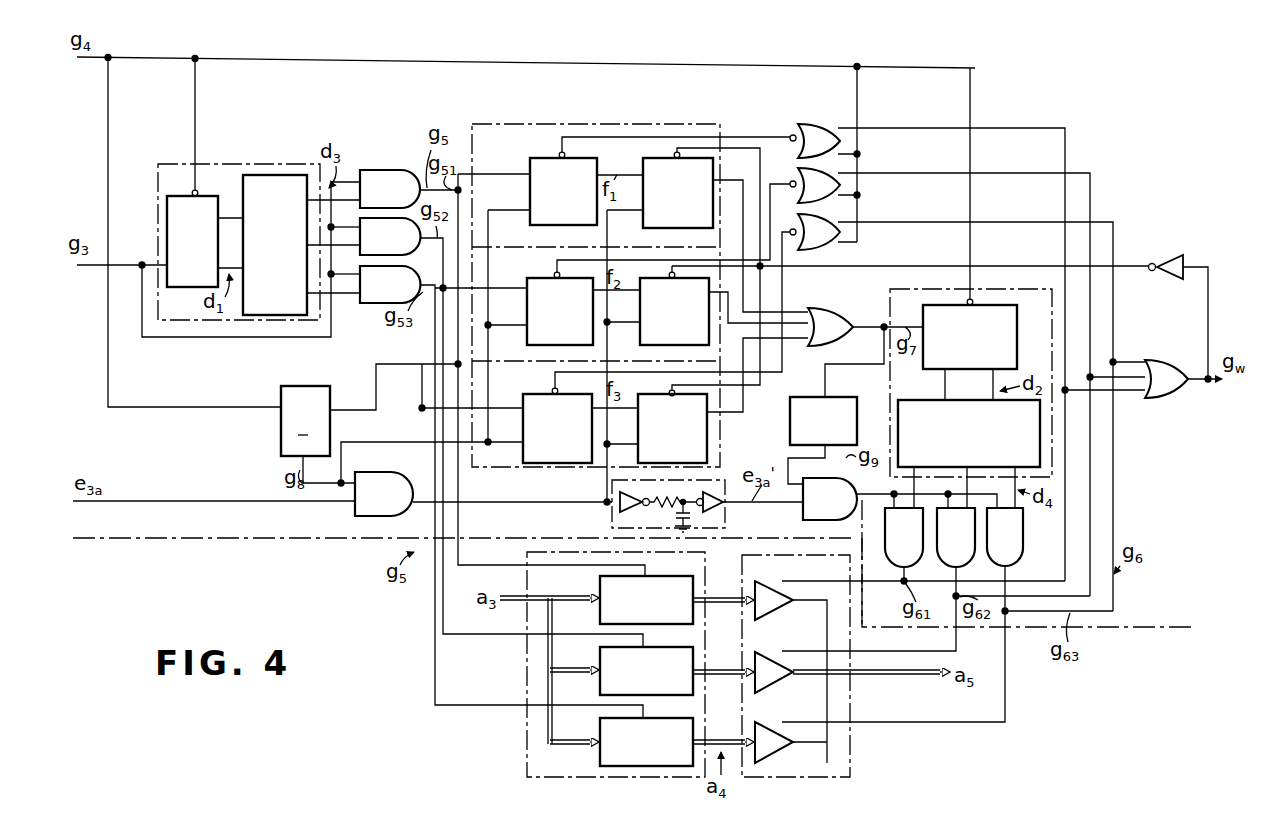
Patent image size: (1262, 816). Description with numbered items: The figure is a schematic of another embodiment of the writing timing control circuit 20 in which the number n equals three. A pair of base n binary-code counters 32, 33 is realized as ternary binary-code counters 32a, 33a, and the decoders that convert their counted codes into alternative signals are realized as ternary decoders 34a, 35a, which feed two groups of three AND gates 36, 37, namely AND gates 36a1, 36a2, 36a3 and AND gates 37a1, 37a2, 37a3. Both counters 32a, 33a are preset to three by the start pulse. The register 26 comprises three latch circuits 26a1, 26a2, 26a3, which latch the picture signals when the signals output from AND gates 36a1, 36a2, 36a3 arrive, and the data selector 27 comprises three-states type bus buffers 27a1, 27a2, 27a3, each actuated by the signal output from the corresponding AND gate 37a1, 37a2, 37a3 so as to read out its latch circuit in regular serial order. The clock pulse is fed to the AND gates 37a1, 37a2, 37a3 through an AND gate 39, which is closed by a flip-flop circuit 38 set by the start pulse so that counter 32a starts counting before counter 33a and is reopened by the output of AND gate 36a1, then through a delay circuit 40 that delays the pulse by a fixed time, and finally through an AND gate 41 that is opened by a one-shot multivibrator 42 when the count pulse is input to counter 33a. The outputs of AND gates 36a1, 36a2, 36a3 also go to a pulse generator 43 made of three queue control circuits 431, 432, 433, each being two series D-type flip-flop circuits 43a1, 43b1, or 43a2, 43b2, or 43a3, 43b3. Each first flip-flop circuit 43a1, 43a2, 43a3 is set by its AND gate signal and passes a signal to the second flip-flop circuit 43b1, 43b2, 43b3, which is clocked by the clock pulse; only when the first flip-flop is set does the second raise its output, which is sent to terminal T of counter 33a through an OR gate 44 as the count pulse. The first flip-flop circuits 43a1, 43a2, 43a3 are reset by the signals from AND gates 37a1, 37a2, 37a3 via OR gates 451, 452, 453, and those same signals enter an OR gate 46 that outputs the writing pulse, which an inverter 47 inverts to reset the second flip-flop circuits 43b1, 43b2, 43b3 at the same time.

The writing timing control circuit 20 is at (200, 541).
The register 26 is at (526, 712).
The latch circuit 26a1 is at (666, 619).
The latch circuit 26a2 is at (666, 690).
The latch circuit 26a3 is at (666, 761).
The data selector 27 is at (852, 732).
The three-states type bus buffer 27a1 is at (764, 616).
The three-states type bus buffer 27a2 is at (763, 689).
The three-states type bus buffer 27a3 is at (763, 759).
The base n binary-code counter 32 is at (229, 162).
The ternary binary-code counter 32a is at (206, 250).
The ternary decoder 34a is at (292, 254).
The group of n AND gates 36 is at (394, 170).
The AND gate 36a1 is at (402, 198).
The AND gate 36a2 is at (402, 245).
The AND gate 36a3 is at (402, 293).
The flip-flop circuit 38 is at (281, 432).
The AND gate 39 is at (387, 505).
The delay circuit 40 is at (612, 522).
The AND gate 41 is at (834, 510).
The one-shot multivibrator 42 is at (836, 432).
The pulse generator 43 is at (614, 122).
The queue control circuit 431 is at (530, 151).
The queue control circuit 432 is at (530, 275).
The queue control circuit 433 is at (530, 390).
The first flip-flop circuit 43a1 is at (590, 208).
The second flip-flop circuit 43b1 is at (705, 210).
The first flip-flop circuit 43a2 is at (588, 326).
The second flip-flop circuit 43b2 is at (702, 326).
The first flip-flop circuit 43a3 is at (586, 445).
The second flip-flop circuit 43b3 is at (700, 445).
The OR gate 44 is at (826, 298).
The OR gate 451 is at (808, 124).
The OR gate 452 is at (850, 158).
The OR gate 453 is at (850, 204).
The OR gate 46 is at (1160, 360).
The inverter 47 is at (1176, 258).
The base n binary-code counter 33 is at (902, 288).
The ternary binary-code counter 33a is at (988, 362).
The ternary decoder 35a is at (988, 444).
The group of n AND gates 37 is at (1020, 548).
The AND gate 37a1 is at (896, 521).
The AND gate 37a2 is at (948, 521).
The AND gate 37a3 is at (997, 521).